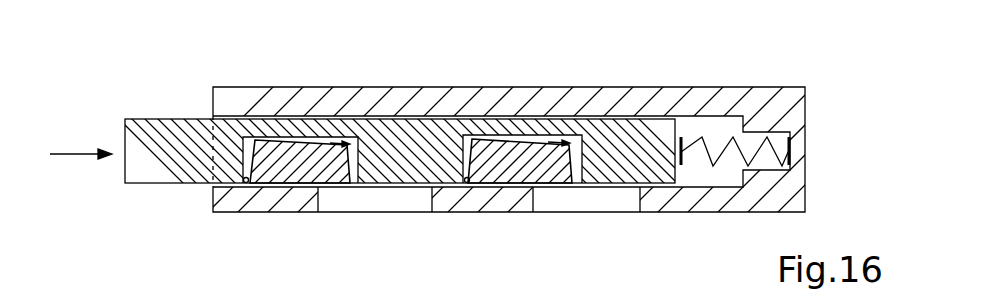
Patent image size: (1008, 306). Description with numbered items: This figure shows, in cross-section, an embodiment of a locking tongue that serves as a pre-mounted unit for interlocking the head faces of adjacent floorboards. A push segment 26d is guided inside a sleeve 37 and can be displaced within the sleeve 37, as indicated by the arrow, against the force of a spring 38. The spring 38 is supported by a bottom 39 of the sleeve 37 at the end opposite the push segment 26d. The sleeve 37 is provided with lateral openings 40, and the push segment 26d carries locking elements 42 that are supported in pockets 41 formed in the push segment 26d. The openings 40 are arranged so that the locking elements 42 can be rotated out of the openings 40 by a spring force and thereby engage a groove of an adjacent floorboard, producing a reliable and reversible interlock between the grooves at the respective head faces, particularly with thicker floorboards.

The push segment 26d is at (150, 163).
The sleeve 37 is at (662, 87).
The spring 38 is at (727, 160).
The bottom 39 is at (807, 148).
The lateral openings 40 is at (393, 197).
The pockets 41 is at (313, 140).
The locking elements 42 is at (300, 163).